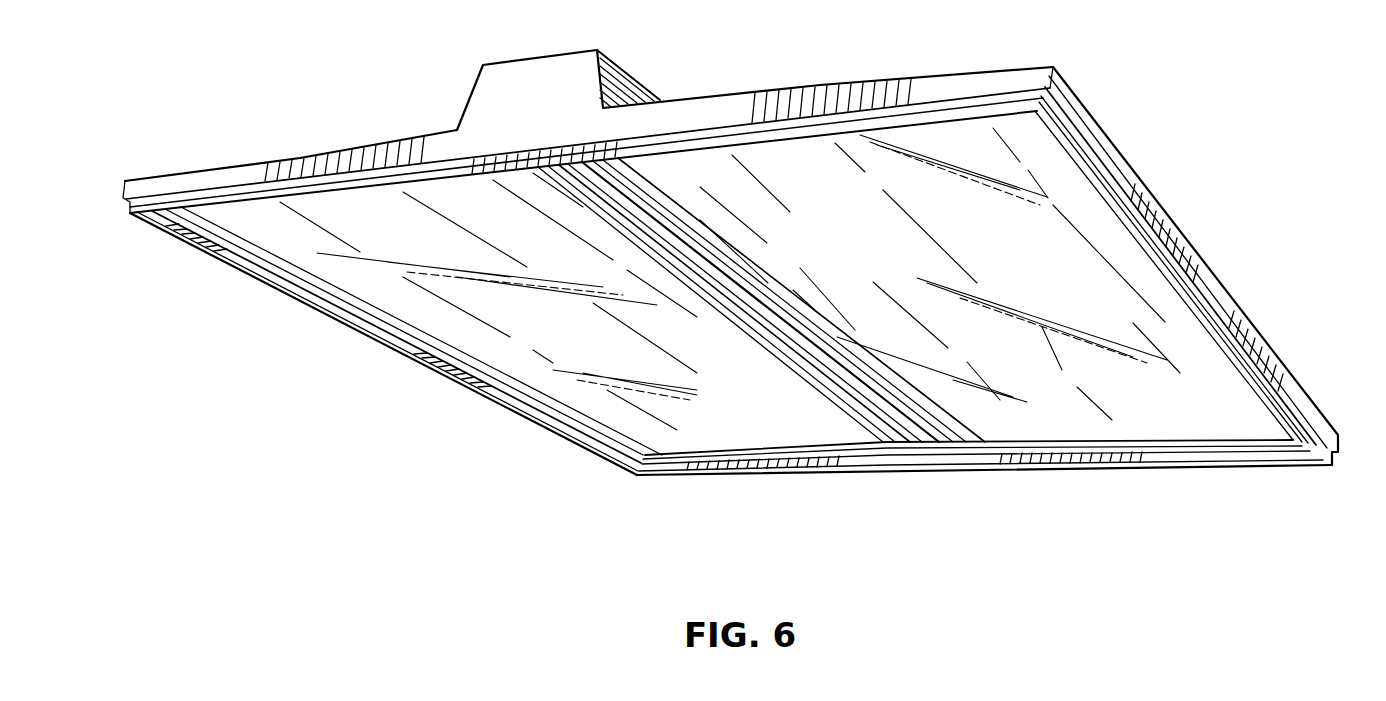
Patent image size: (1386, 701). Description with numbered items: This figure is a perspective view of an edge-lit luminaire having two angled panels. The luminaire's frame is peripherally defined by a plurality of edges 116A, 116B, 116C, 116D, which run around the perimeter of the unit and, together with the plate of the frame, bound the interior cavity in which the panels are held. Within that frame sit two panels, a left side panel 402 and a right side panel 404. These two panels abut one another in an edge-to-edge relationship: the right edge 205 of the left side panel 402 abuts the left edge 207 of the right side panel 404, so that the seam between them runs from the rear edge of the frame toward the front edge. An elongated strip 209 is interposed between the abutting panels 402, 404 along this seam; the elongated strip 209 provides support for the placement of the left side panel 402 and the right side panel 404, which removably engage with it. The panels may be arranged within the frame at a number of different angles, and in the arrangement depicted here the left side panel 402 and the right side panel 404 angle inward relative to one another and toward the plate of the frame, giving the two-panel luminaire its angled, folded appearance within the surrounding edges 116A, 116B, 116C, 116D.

The edge 116A is at (480, 396).
The edge 116B is at (1160, 213).
The edge 116C is at (779, 104).
The edge 116D is at (1278, 468).
The left side panel 402 is at (597, 347).
The right side panel 404 is at (1037, 257).
The right edge 205 is at (897, 423).
The elongated strip 209 is at (937, 423).
The left edge 207 is at (940, 420).